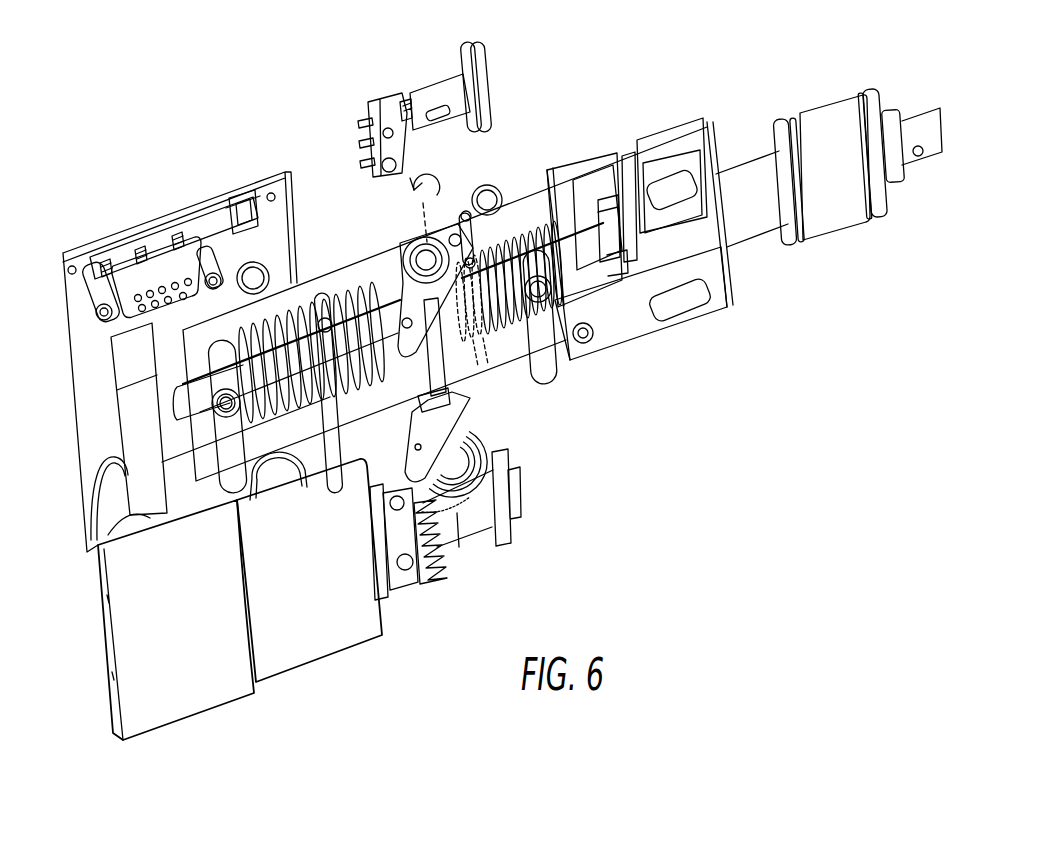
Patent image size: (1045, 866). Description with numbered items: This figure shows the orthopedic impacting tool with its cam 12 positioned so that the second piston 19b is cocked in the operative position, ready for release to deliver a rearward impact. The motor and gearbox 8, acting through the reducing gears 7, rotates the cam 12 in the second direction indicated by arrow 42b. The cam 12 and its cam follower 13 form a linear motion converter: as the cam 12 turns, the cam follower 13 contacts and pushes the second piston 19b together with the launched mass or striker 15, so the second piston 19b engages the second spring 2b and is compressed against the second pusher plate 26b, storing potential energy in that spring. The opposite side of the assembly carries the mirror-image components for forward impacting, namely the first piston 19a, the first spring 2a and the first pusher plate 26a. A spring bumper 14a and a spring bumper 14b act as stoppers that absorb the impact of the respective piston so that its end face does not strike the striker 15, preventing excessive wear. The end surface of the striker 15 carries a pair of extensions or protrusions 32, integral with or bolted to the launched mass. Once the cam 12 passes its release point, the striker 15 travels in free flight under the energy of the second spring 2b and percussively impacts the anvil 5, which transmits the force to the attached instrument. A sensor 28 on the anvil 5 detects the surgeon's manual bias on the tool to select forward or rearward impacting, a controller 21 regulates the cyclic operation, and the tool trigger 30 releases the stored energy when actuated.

The first spring 2a is at (336, 294).
The second spring 2b is at (535, 250).
The anvil 5 is at (899, 180).
The reducing gears 7 is at (440, 548).
The motor and gearbox 8 is at (205, 695).
The cam 12 is at (461, 216).
The cam follower 13 is at (489, 186).
The spring bumper 14a is at (231, 340).
The spring bumper 14b is at (606, 215).
The striker 15 is at (503, 370).
The first piston 19a is at (177, 395).
The second piston 19b is at (587, 247).
The controller 21 is at (72, 377).
The first pusher plate 26a is at (128, 434).
The second pusher plate 26b is at (625, 160).
The sensor 28 is at (922, 157).
The tool trigger 30 is at (433, 90).
The extensions or protrusions 32 is at (617, 265).
The arrow 42b is at (425, 192).